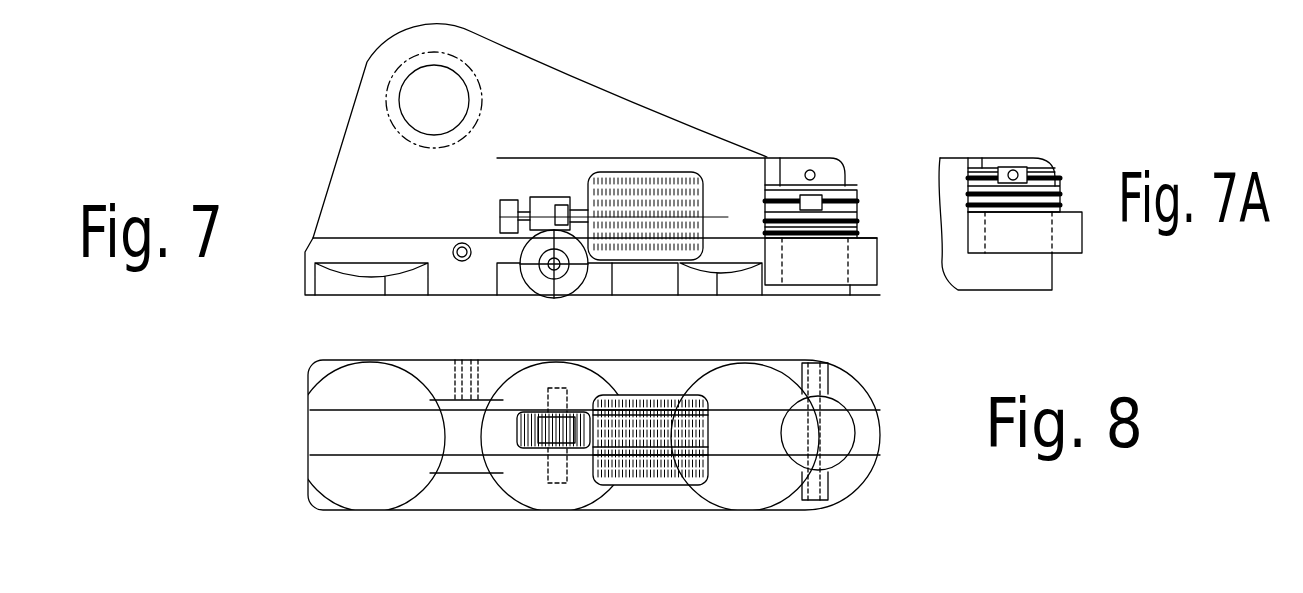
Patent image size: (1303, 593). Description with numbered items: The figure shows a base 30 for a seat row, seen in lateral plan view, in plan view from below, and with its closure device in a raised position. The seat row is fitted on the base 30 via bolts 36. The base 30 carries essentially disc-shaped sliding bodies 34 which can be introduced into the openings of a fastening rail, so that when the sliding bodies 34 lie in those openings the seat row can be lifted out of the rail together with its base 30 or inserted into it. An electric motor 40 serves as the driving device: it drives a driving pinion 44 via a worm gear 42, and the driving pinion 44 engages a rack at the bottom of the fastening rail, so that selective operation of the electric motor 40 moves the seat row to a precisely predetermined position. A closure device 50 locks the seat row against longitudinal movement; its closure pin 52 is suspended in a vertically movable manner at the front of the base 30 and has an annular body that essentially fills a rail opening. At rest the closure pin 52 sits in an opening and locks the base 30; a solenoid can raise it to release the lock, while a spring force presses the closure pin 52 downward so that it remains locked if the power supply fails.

In FIG. 7, the base 30 is at (717, 128).
In FIG. 8, the base 30 is at (594, 435).
In FIG. 7, the sliding body 34 is at (790, 318).
In FIG. 8, the sliding body 34 is at (390, 333).
In FIG. 7, the bolt 36 is at (403, 75).
In FIG. 7, the electric motor 40 is at (638, 180).
In FIG. 8, the electric motor 40 is at (650, 440).
In FIG. 7, the worm gear 42 is at (553, 197).
In FIG. 7, the driving pinion 44 is at (520, 255).
In FIG. 8, the driving pinion 44 is at (553, 435).
In FIG. 7, the closure device 50 is at (871, 199).
In FIG. 7A, the closure device 50 is at (1059, 145).
In FIG. 7, the closure pin 52 is at (877, 262).
In FIG. 7A, the closure pin 52 is at (1082, 243).